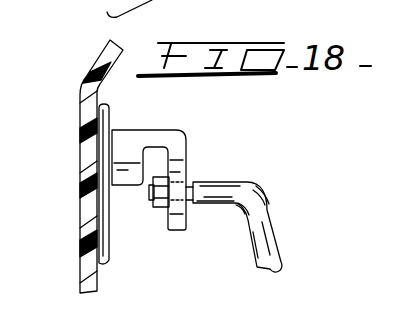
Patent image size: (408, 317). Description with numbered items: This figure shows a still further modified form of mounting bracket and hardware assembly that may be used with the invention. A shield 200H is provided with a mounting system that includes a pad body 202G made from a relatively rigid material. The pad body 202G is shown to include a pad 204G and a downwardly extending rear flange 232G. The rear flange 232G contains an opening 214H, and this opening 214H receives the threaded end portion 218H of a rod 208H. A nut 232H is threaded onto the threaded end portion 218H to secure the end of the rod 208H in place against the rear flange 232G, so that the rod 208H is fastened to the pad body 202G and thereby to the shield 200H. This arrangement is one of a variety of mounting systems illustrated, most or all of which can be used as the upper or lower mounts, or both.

The shield 200H is at (99, 58).
The pad body 202G is at (117, 119).
The pad 204G is at (100, 259).
The rod 208H is at (267, 237).
The opening 214H is at (192, 207).
The threaded end portion 218H is at (147, 194).
The rear flange 232G is at (187, 168).
The nut 232H is at (170, 231).